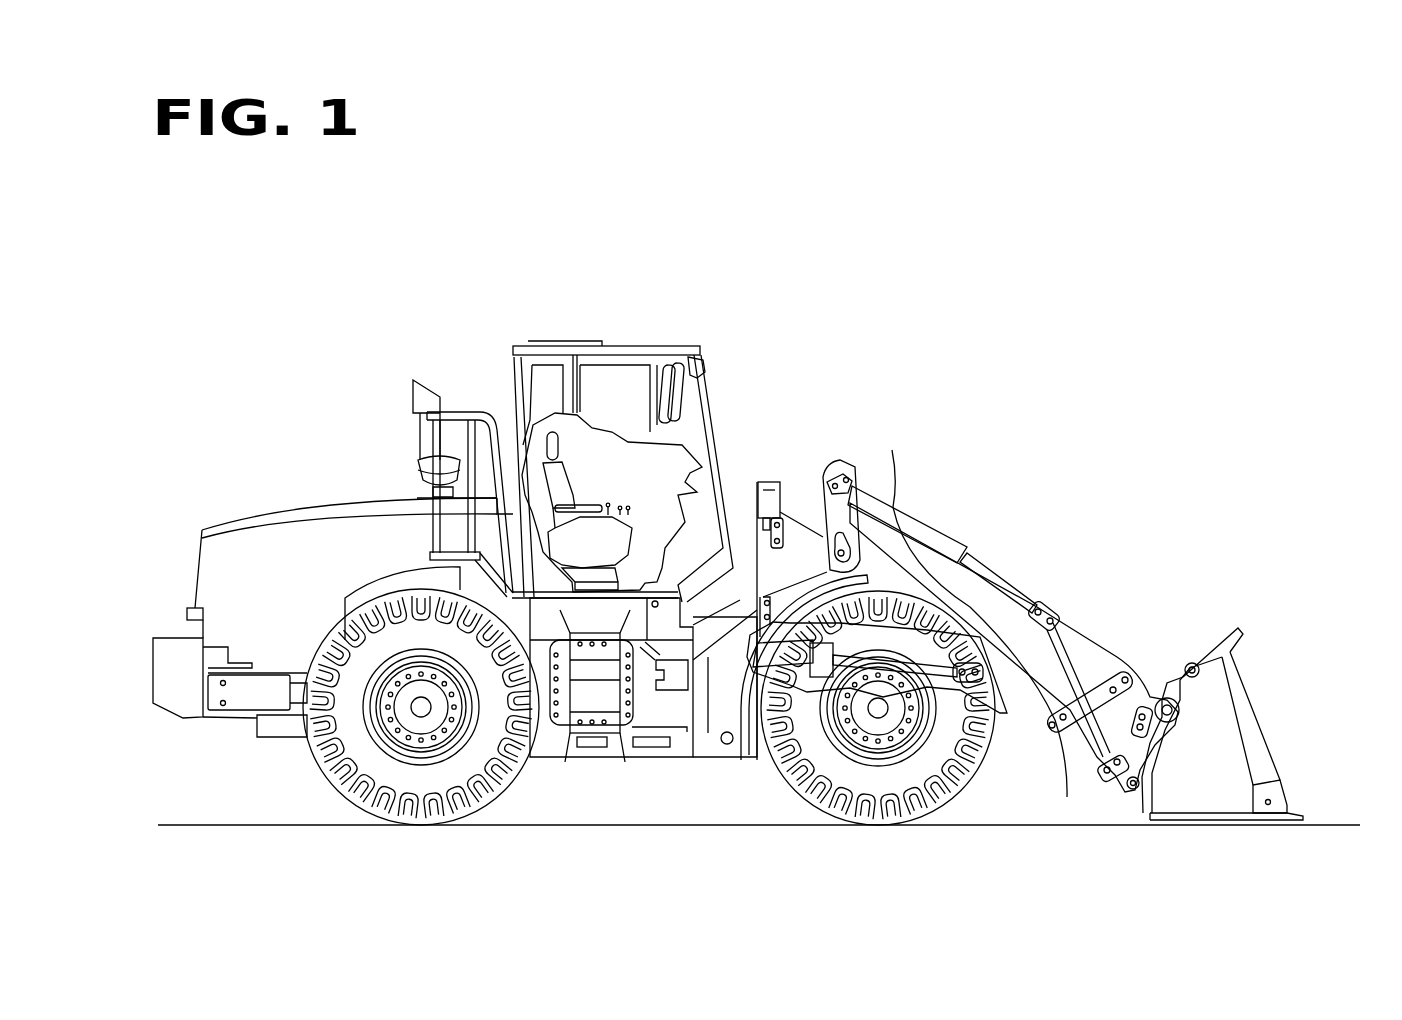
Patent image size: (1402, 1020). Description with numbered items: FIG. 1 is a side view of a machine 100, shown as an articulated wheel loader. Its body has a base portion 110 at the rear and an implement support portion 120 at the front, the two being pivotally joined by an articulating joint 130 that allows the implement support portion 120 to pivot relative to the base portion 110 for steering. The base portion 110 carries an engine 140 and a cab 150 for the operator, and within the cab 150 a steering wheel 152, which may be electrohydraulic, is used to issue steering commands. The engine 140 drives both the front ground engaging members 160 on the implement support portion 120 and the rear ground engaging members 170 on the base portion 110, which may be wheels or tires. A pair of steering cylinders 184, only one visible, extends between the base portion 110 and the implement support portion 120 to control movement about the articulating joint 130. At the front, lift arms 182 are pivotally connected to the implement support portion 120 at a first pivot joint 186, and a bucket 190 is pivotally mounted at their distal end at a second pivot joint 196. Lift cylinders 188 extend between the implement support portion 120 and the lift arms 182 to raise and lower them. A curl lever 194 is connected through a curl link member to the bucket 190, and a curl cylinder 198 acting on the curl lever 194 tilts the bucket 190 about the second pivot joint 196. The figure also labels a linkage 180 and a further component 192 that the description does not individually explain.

The machine 100 is at (1153, 248).
The base portion 110 is at (233, 718).
The implement support portion 120 is at (723, 745).
The articulating joint 130 is at (650, 775).
The engine 140 is at (273, 455).
The cab 150 is at (603, 343).
The steering wheel 152 is at (636, 450).
The front ground engaging members 160 is at (940, 812).
The rear ground engaging members 170 is at (487, 803).
The loader linkage assembly 180 is at (862, 400).
The lift arms 182 is at (862, 555).
The steering cylinders 184 is at (681, 690).
The first pivot joint 186 is at (783, 516).
The lift cylinders 188 is at (767, 727).
The bucket 190 is at (1219, 766).
The lift cylinder 192 is at (937, 533).
The curl lever 194 is at (1085, 633).
The second pivot joint 196 is at (1133, 793).
The curl cylinder 198 is at (1097, 710).